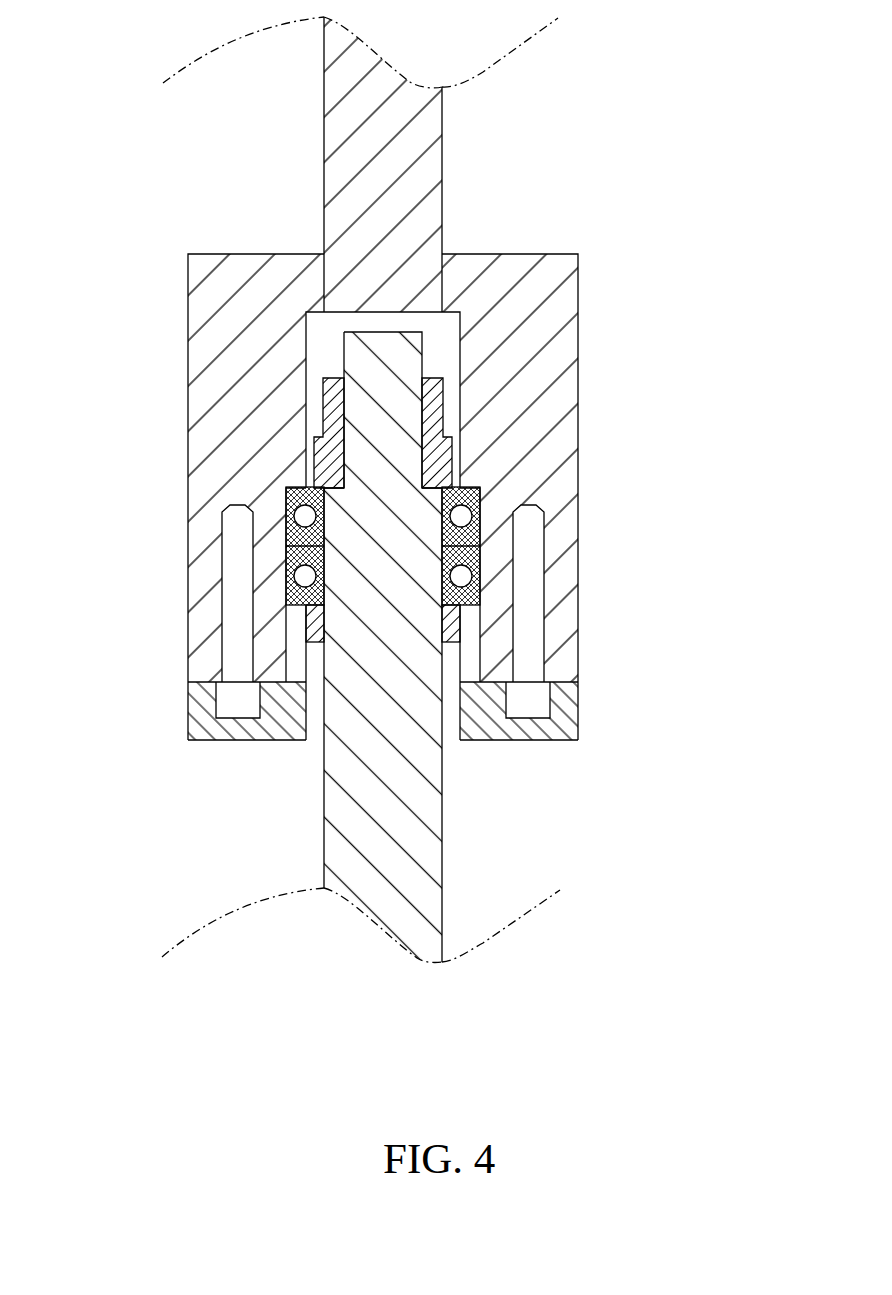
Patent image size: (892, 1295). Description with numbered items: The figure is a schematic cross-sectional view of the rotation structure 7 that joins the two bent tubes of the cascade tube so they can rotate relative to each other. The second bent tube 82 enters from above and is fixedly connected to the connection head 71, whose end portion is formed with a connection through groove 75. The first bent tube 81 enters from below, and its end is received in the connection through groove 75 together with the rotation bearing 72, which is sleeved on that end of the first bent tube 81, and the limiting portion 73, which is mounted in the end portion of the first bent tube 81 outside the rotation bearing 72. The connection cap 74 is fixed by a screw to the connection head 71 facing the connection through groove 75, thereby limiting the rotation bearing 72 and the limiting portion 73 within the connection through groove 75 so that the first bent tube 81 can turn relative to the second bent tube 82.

The rotation structure 7 is at (487, 458).
The connection head 71 is at (530, 450).
The rotation bearing 72 is at (485, 528).
The limiting portion 73 is at (443, 437).
The connection cap 74 is at (453, 694).
The connection through groove 75 is at (440, 347).
The first bent tube 81 is at (383, 830).
The second bent tube 82 is at (360, 183).